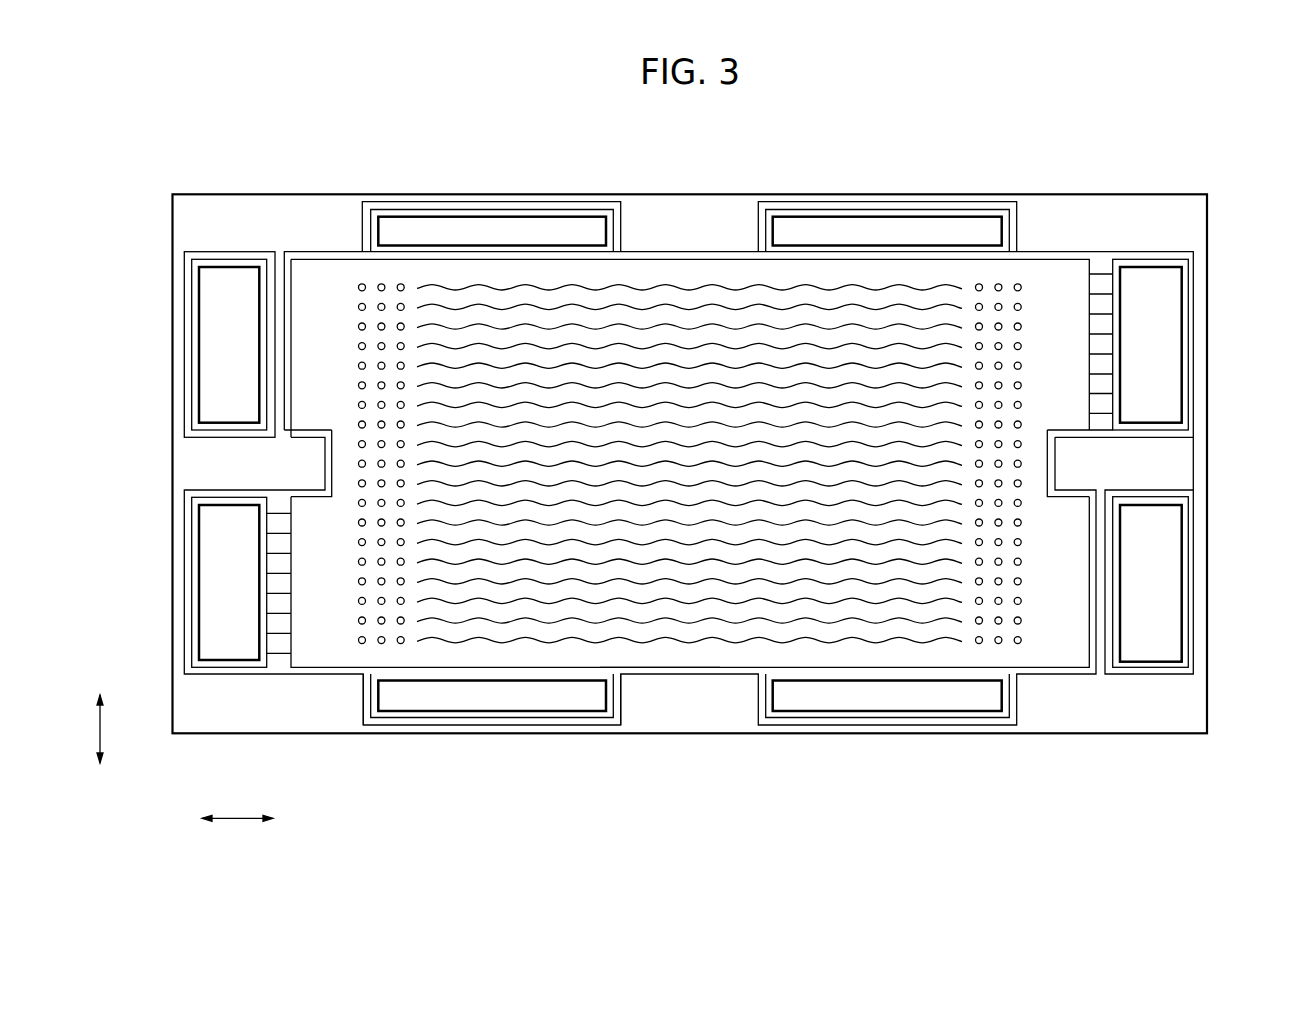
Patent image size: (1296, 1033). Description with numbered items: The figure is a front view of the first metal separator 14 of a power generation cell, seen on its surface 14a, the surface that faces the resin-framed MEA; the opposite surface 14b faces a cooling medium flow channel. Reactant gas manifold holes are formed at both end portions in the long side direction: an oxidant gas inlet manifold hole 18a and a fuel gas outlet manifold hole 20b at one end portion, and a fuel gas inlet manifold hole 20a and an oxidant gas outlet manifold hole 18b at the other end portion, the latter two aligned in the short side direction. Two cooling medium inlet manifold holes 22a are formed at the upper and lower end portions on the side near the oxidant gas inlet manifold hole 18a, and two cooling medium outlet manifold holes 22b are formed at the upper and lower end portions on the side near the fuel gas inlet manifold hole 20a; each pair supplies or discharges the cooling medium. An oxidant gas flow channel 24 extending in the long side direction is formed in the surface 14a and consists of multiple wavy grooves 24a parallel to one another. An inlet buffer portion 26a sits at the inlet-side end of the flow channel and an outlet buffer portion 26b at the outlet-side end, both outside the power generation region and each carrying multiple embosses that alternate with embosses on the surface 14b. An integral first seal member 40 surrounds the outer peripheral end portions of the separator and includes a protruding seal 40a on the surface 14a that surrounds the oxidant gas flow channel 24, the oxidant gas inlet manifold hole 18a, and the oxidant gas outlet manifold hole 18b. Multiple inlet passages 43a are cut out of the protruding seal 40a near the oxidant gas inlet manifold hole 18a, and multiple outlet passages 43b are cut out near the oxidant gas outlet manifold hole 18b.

The first metal separator 14 is at (287, 160).
The surface 14a is at (697, 658).
The surface 14b is at (672, 658).
The oxidant gas inlet manifold hole 18a is at (1168, 364).
The oxidant gas outlet manifold hole 18b is at (210, 541).
The fuel gas inlet manifold hole 20a is at (210, 304).
The fuel gas outlet manifold hole 20b is at (1168, 578).
The cooling medium inlet manifold hole 22a is at (920, 762).
The cooling medium outlet manifold hole 22b is at (543, 762).
The oxidant gas flow channel 24 is at (689, 461).
The wavy grooves 24a is at (697, 328).
The inlet buffer portion 26a is at (1018, 283).
The outlet buffer portion 26b is at (358, 648).
The first seal member 40 is at (1142, 192).
The protruding seal 40a is at (580, 207).
The inlet passages 43a is at (1103, 324).
The outlet passages 43b is at (277, 602).